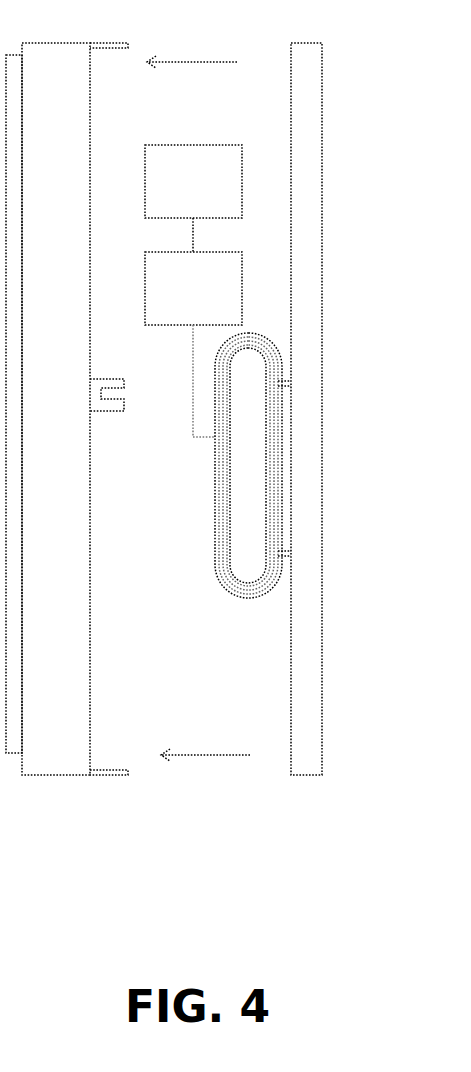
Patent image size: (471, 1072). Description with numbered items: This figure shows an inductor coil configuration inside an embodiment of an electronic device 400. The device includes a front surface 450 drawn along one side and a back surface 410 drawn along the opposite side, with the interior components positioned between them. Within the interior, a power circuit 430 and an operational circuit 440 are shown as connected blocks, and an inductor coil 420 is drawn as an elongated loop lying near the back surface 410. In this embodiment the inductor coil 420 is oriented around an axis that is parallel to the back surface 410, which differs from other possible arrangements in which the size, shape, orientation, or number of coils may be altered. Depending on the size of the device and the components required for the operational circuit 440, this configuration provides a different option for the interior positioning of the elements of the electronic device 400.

The electronic device 400 is at (164, 459).
The back surface 410 is at (291, 771).
The inductor coil 420 is at (218, 580).
The power circuit 430 is at (184, 315).
The operational circuit 440 is at (184, 208).
The front surface 450 is at (77, 741).